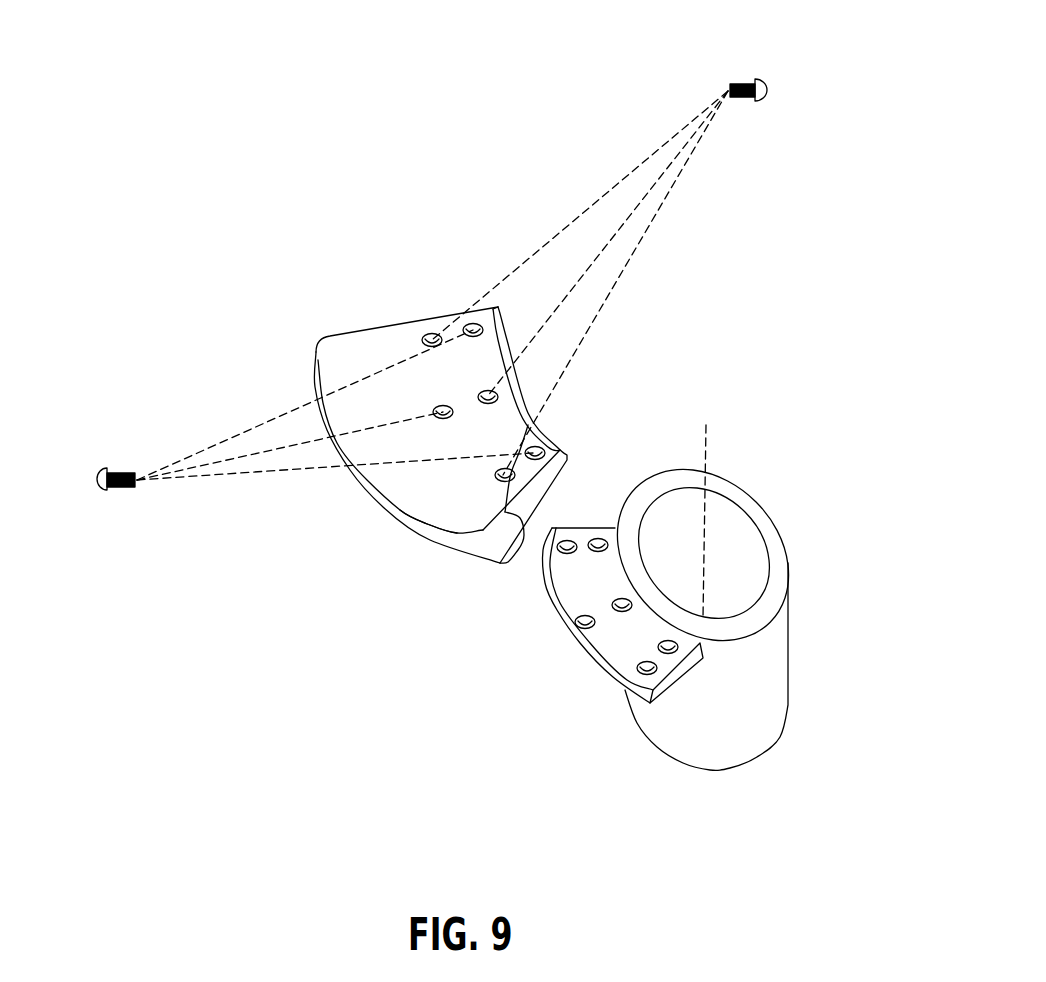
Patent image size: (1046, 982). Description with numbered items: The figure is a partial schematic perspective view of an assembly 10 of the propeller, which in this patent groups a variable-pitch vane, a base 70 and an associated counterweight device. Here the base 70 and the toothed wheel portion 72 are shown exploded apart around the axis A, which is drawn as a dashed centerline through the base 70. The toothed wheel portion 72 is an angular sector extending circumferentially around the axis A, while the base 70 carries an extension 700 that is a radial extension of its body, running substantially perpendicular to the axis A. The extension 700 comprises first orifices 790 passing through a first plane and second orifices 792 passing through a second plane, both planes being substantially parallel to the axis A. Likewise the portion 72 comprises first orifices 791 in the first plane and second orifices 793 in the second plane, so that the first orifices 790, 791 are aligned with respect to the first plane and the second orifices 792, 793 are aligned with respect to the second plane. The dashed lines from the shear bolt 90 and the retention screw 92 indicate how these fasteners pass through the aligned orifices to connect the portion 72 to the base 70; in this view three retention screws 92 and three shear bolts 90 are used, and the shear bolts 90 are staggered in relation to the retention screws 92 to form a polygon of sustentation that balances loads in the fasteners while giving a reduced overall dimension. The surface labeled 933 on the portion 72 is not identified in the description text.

The assembly 10 is at (623, 606).
The base 70 is at (764, 685).
The toothed wheel portion 72 is at (490, 388).
The shear bolt 90 is at (94, 457).
The retention screw 92 is at (781, 87).
The extension 700 is at (566, 692).
The first orifice 790 is at (594, 551).
The first orifice 791 is at (497, 396).
The second orifice 792 is at (638, 670).
The second orifice 793 is at (424, 343).
The inner surface 933 is at (460, 517).
The axis A is at (707, 427).